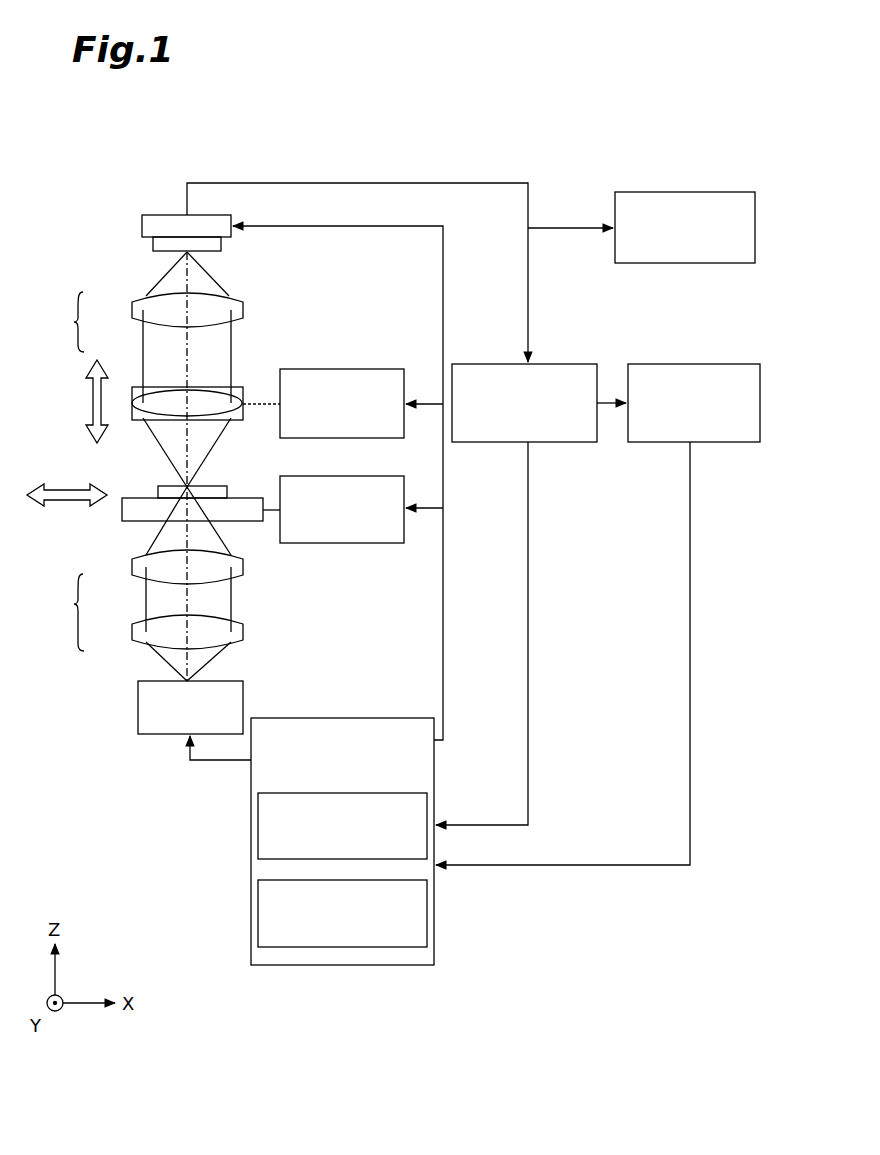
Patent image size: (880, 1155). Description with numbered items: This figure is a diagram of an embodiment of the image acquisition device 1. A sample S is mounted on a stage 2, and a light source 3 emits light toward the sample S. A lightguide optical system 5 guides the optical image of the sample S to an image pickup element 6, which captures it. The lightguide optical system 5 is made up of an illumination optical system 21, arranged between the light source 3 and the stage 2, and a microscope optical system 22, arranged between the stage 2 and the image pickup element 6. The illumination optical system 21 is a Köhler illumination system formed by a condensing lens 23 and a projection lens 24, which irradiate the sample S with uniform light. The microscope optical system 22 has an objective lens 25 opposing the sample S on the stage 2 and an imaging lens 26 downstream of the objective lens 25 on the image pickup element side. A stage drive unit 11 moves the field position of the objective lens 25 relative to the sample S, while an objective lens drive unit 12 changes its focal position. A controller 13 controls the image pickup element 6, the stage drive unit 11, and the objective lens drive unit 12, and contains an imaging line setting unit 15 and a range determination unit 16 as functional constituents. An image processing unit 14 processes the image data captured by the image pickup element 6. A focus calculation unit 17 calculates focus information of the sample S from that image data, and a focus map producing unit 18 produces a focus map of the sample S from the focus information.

The image acquisition device 1 is at (102, 170).
The stage 2 is at (122, 512).
The light source 3 is at (138, 706).
The lightguide optical system 5 is at (187, 471).
The image pickup element 6 is at (165, 215).
The stage drive unit 11 is at (360, 543).
The objective lens drive unit 12 is at (370, 369).
The controller 13 is at (384, 718).
The image processing unit 14 is at (733, 192).
The imaging line setting unit 15 is at (262, 880).
The range determination unit 16 is at (262, 793).
The focus calculation unit 17 is at (572, 364).
The focus map producing unit 18 is at (738, 364).
The illumination optical system 21 is at (52, 612).
The microscope optical system 22 is at (52, 322).
The condensing lens 23 is at (132, 632).
The projection lens 24 is at (132, 567).
The objective lens 25 is at (132, 394).
The imaging lens 26 is at (132, 310).
The sample S is at (158, 490).